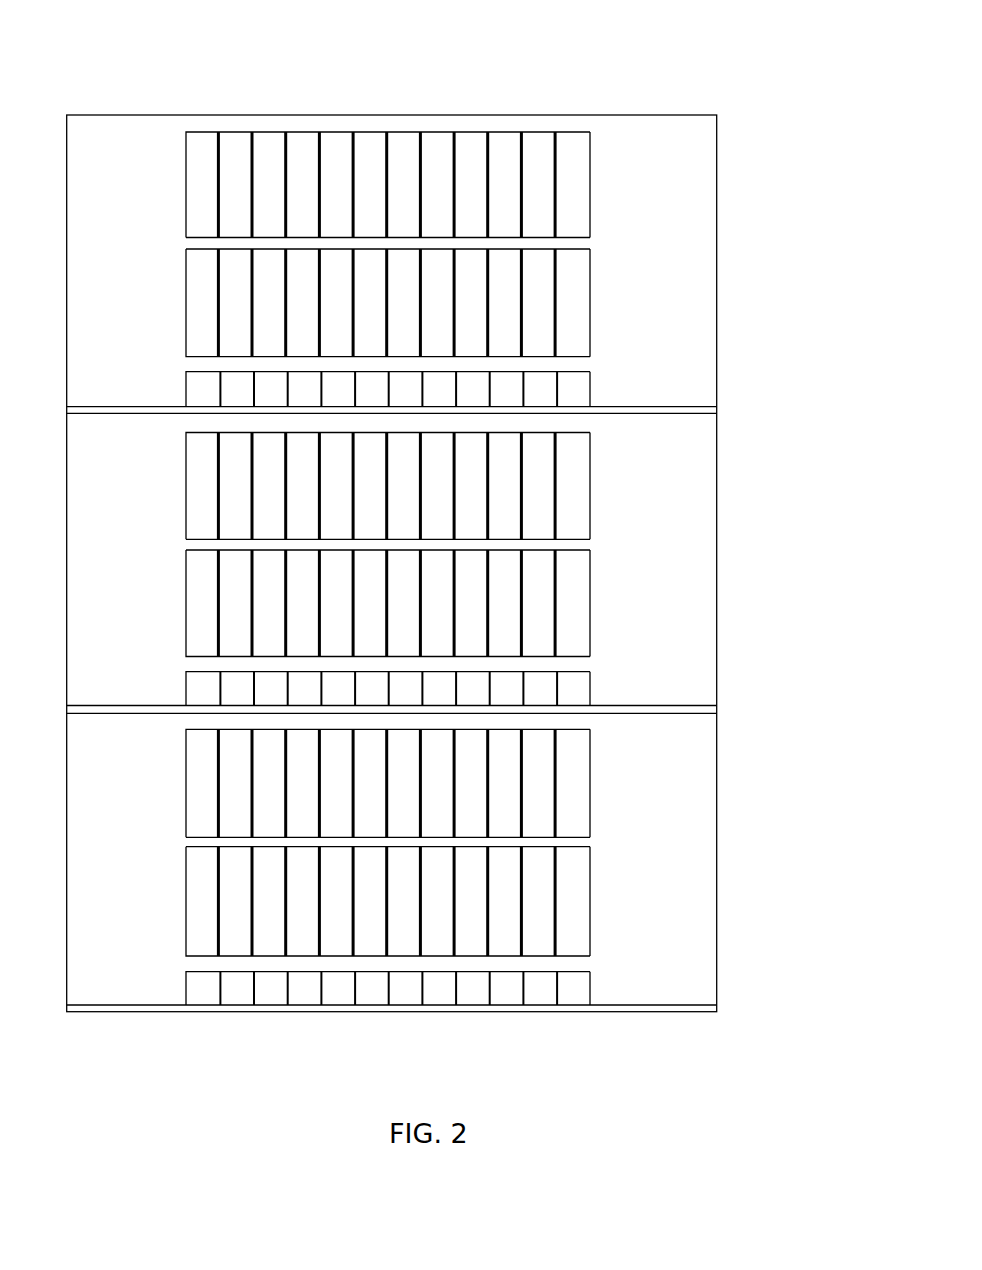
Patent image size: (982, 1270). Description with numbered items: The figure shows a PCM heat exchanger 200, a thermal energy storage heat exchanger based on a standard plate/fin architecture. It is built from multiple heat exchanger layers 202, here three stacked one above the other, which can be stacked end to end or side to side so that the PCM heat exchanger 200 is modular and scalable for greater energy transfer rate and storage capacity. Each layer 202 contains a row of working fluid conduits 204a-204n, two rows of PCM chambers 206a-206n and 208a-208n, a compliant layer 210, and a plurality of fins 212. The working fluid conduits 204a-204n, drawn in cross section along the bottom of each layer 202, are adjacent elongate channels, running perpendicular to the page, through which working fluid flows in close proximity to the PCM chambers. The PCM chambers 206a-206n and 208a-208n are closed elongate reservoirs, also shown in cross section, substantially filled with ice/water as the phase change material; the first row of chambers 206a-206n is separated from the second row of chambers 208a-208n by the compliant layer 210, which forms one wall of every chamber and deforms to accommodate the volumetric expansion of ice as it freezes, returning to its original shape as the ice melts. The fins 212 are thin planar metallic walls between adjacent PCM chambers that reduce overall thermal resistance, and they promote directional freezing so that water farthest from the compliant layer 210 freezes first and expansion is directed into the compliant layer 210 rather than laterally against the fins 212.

The PCM heat exchanger 200 is at (511, 39).
The heat exchanger layer 202 is at (735, 713).
The working fluid conduit 204a is at (186, 389).
The working fluid conduit 204n is at (617, 380).
The PCM chamber 206a is at (186, 305).
The PCM chamber 206n is at (617, 305).
The PCM chamber 208a is at (186, 192).
The PCM chamber 208n is at (617, 177).
The compliant layer 210 is at (600, 246).
The fin 212 is at (219, 151).